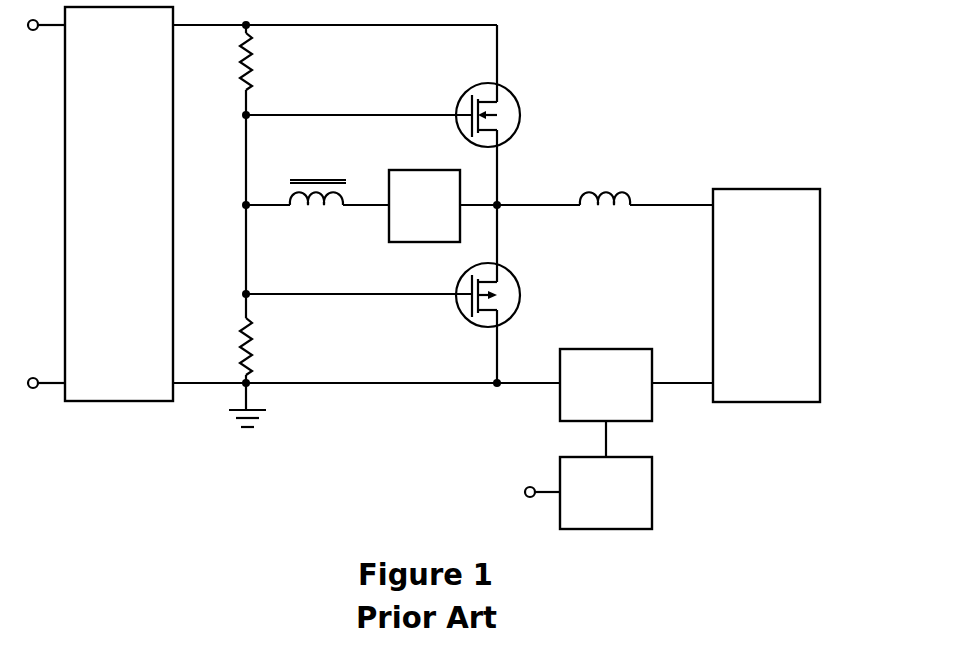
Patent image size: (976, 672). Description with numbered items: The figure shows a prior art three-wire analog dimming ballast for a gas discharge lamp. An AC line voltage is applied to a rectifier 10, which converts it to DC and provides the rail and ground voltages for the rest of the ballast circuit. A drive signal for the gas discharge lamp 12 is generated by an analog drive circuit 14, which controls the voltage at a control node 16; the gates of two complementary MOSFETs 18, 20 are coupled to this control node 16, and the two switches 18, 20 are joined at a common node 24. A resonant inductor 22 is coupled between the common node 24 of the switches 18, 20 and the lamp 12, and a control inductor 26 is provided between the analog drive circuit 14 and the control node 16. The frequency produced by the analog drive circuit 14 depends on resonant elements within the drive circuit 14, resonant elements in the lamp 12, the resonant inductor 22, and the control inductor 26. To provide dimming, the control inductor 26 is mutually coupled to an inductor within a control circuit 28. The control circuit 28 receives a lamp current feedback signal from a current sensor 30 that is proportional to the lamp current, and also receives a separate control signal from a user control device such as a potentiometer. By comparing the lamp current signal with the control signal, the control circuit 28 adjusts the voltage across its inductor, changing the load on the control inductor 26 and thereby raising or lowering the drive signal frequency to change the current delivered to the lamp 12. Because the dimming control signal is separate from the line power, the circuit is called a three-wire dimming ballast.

The rectifier 10 is at (173, 105).
The gas discharge lamp 12 is at (821, 233).
The analog drive circuit 14 is at (424, 170).
The control node 16 is at (244, 203).
The MOSFET 18 is at (513, 94).
The MOSFET 20 is at (513, 274).
The resonant inductor 22 is at (640, 192).
The common node 24 is at (500, 202).
The control inductor 26 is at (349, 192).
The control circuit 28 is at (652, 493).
The current sensor 30 is at (613, 349).